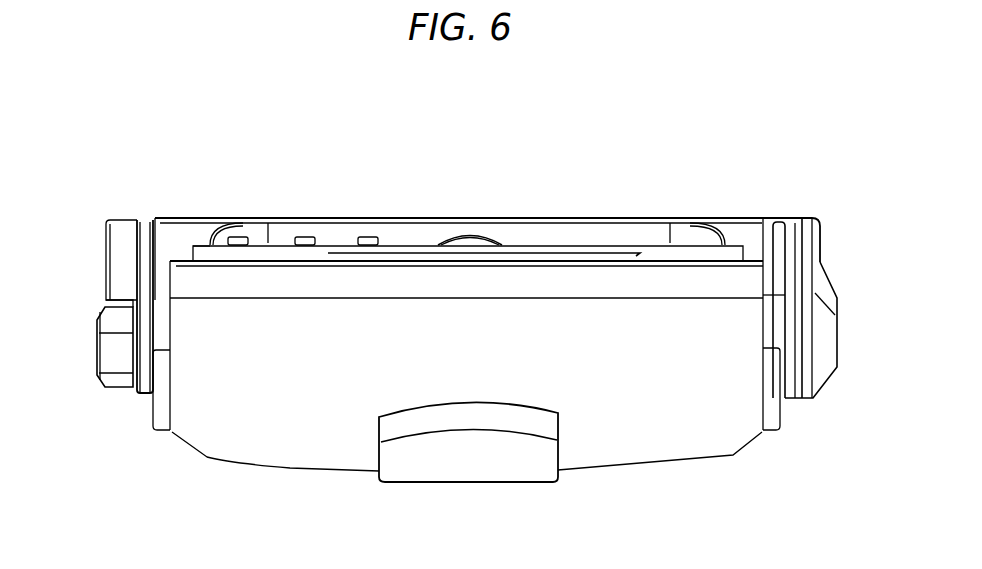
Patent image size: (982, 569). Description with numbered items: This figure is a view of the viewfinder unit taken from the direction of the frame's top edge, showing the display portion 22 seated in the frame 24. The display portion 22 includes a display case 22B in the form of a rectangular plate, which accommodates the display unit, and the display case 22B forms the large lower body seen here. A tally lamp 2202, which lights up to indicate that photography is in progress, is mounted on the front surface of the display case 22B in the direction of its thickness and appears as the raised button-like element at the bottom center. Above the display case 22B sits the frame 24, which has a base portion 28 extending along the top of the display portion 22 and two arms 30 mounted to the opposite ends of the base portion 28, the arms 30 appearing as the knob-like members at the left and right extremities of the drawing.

The display portion 22 is at (374, 177).
The display case 22B is at (285, 458).
The tally lamp 2202 is at (472, 475).
The frame 24 is at (714, 207).
The base portion 28 is at (189, 226).
The arm 30 is at (108, 268).